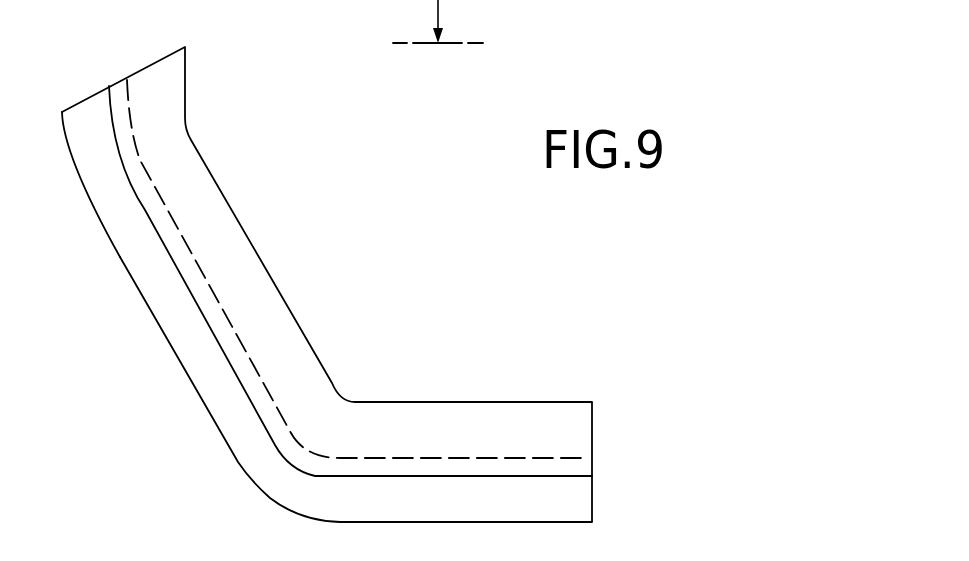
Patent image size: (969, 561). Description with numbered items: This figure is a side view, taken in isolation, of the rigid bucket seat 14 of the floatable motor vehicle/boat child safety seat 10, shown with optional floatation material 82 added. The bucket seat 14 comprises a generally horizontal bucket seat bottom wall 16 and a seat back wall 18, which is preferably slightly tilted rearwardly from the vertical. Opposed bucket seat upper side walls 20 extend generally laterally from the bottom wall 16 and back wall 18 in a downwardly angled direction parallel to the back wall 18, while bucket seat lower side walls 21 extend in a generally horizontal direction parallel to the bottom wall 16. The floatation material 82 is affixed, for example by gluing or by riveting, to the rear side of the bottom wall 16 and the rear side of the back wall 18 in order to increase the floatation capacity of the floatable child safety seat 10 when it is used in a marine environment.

The floatable motor vehicle/boat child safety seat 10 is at (438, 41).
The bucket seat 14 is at (377, 335).
The bucket seat bottom wall 16 is at (577, 468).
The seat back wall 18 is at (120, 92).
The bucket seat upper side walls 20 is at (202, 190).
The bucket seat lower side walls 21 is at (440, 412).
The floatation material 82 is at (220, 403).